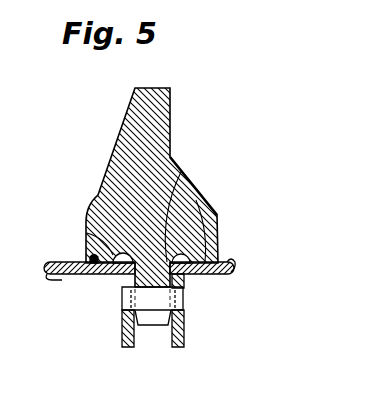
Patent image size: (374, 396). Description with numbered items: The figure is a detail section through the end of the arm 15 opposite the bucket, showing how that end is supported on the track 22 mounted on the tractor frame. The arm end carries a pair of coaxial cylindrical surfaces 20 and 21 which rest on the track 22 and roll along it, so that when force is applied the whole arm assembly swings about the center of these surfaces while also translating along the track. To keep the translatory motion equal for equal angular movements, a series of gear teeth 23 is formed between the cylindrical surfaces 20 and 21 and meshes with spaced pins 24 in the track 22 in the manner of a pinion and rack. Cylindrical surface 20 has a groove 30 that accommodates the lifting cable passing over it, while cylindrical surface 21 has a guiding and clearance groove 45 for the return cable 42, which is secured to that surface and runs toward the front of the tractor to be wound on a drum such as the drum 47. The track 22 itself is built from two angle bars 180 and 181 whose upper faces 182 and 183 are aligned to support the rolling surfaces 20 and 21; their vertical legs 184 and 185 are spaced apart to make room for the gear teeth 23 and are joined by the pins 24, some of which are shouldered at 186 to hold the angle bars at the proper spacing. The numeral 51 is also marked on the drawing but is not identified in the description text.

The valve body stem 15 is at (160, 98).
The body portion 45 is at (175, 197).
The body portion 42 is at (201, 197).
The body wall 21 is at (216, 225).
The shoulder 30 is at (95, 242).
The diaphragm 20 is at (90, 256).
The flange plate 180 is at (48, 273).
The flange lip 182 is at (44, 262).
The flange end 183 is at (220, 291).
The flange assembly 22 is at (70, 279).
The nut 24 is at (163, 299).
The sleeve wall 186 is at (122, 297).
The passage 23 is at (153, 325).
The sleeve 181 is at (185, 323).
The sleeve leg 185 is at (184, 341).
The sleeve leg 184 is at (125, 342).
The element 47 is at (10, 116).
The element 51 is at (9, 167).